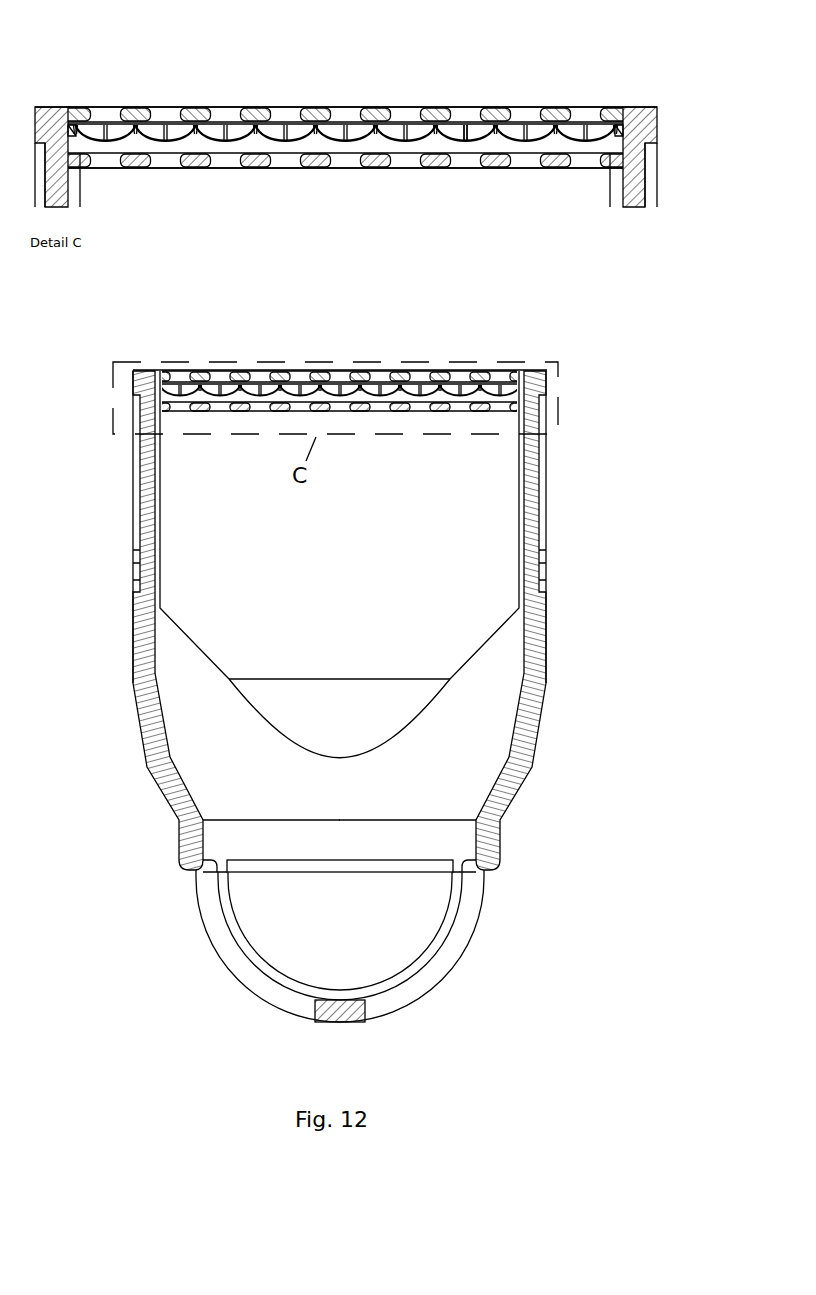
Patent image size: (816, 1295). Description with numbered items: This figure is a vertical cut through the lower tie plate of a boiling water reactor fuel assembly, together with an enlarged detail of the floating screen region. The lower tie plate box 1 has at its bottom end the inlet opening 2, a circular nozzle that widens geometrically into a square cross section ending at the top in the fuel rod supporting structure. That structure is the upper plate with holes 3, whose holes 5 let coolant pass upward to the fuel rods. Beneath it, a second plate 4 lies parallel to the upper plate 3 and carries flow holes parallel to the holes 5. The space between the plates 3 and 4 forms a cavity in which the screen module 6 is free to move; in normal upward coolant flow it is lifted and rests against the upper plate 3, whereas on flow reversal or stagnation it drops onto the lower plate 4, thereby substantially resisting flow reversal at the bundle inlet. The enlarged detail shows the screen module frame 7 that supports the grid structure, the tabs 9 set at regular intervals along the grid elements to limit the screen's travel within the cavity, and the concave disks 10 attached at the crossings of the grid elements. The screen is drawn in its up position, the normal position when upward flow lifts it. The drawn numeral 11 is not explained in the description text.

The lower tie plate box 1 is at (130, 703).
The inlet opening 2 is at (356, 790).
The plate with holes 3 is at (106, 90).
The plate 4 is at (139, 182).
The holes 5 is at (347, 108).
The screen module 6 is at (237, 140).
The screen module frame 7 is at (69, 127).
The tabs 9 is at (466, 132).
The concave disks 10 is at (597, 132).
The printed circuit board 11 is at (345, 170).